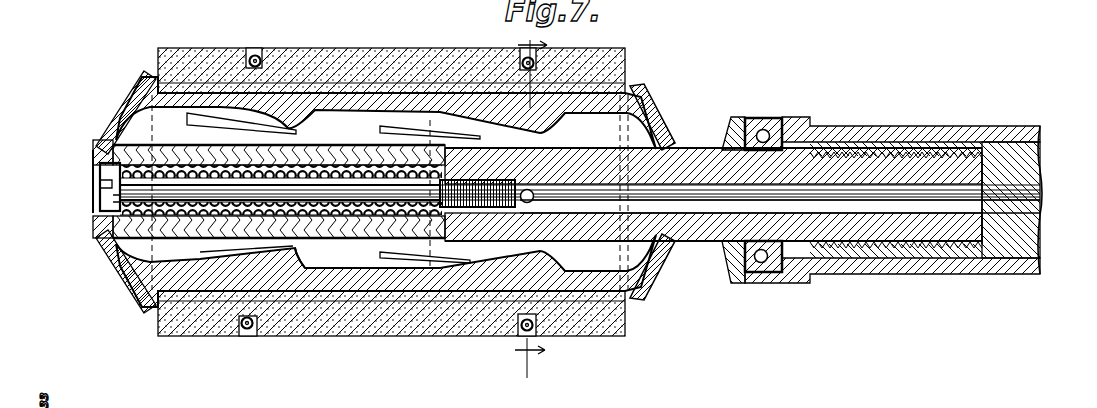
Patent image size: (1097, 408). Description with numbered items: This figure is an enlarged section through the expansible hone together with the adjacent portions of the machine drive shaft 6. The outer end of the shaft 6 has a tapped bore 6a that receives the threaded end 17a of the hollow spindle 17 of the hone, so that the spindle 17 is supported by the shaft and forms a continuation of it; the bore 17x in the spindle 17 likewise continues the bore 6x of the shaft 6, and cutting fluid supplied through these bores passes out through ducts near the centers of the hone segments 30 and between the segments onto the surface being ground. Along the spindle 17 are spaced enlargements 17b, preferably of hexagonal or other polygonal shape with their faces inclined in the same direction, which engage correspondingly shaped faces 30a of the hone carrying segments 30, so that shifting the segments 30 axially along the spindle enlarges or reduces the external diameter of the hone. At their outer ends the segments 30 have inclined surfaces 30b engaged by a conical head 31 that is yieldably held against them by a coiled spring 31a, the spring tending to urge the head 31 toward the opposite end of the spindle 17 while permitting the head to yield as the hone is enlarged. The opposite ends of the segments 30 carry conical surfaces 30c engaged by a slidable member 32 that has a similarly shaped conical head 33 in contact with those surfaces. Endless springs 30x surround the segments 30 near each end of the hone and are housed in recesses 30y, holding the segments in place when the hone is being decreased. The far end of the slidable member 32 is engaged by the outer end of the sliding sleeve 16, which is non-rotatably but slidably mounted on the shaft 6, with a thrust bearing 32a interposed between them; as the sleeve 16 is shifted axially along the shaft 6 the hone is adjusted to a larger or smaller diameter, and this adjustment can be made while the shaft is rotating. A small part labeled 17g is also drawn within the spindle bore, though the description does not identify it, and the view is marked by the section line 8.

The shaft 6 is at (1024, 167).
The tapped bore 6a is at (850, 150).
The bore of shaft 6x is at (1034, 210).
The section line 8- 8 is at (531, 209).
The sliding sleeve 16 is at (952, 130).
The spindle 17 is at (688, 150).
The threaded end 17a is at (950, 168).
The spaced enlargements 17b is at (448, 262).
The ball valve 17g is at (538, 195).
The bore of spindle 17x is at (580, 200).
The hone carrying segments 30 is at (497, 110).
The inclined faces of segments 30a is at (297, 117).
The inclined surfaces 30b is at (133, 110).
The conical surfaces 30c is at (650, 106).
The endless springs 30x is at (255, 55).
The recesses 30y is at (223, 60).
The conical head 31 is at (110, 248).
The coiled spring 31a is at (307, 214).
The slidable member 32 is at (708, 250).
The thrust bearing 32a is at (768, 126).
The conical head 33 is at (650, 292).